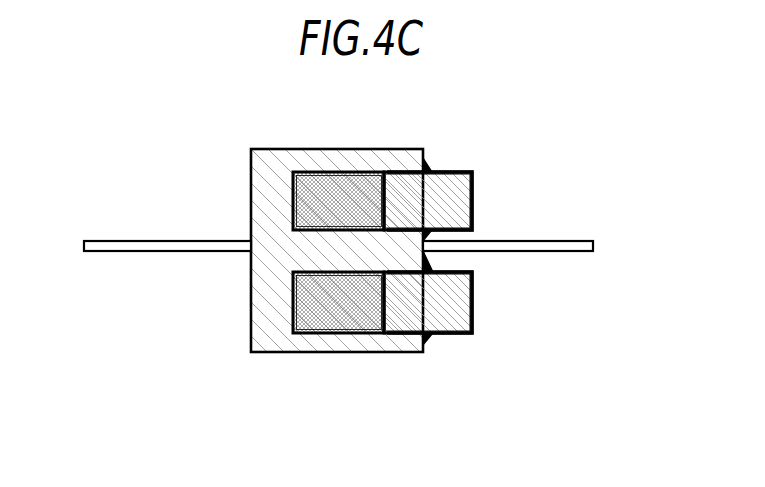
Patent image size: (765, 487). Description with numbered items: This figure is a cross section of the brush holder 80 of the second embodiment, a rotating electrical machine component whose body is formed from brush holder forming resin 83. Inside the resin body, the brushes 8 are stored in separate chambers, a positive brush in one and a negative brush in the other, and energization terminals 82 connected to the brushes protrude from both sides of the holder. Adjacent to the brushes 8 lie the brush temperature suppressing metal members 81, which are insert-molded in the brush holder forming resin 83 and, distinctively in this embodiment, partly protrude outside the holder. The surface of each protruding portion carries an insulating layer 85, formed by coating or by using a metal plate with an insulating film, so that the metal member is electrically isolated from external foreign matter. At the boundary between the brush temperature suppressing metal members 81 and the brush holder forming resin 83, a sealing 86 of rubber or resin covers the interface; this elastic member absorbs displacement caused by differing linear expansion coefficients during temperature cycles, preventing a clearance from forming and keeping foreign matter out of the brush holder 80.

The brush holder 80 is at (204, 133).
The brushes 8 is at (300, 211).
The brush temperature suppressing metal member 81 is at (457, 218).
The energization terminals 82 is at (149, 240).
The brush holder forming resin 83 is at (357, 346).
The insulating layer 85 is at (474, 179).
The sealing 86 is at (427, 167).